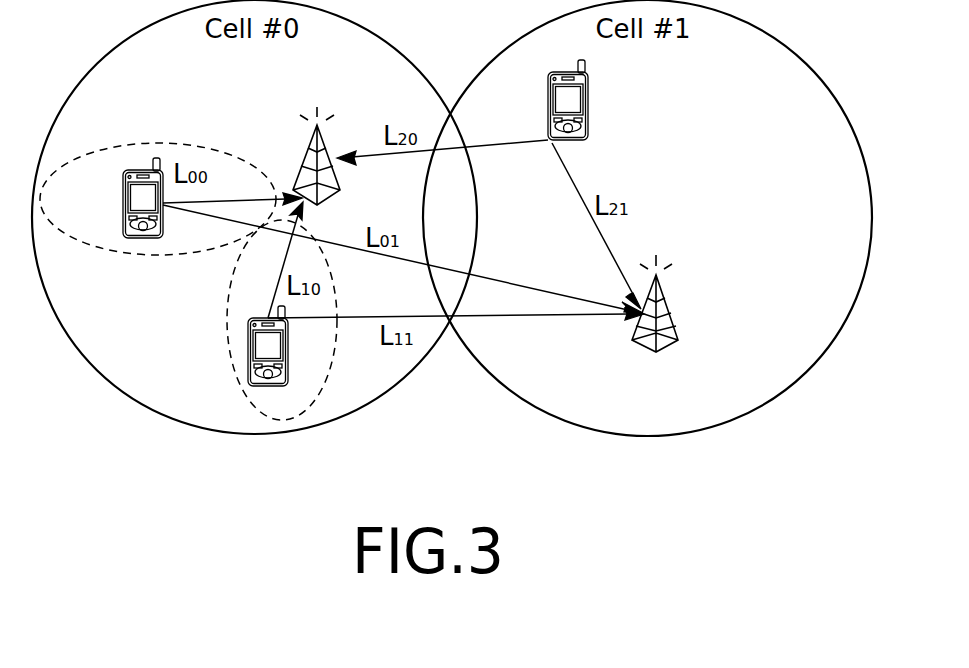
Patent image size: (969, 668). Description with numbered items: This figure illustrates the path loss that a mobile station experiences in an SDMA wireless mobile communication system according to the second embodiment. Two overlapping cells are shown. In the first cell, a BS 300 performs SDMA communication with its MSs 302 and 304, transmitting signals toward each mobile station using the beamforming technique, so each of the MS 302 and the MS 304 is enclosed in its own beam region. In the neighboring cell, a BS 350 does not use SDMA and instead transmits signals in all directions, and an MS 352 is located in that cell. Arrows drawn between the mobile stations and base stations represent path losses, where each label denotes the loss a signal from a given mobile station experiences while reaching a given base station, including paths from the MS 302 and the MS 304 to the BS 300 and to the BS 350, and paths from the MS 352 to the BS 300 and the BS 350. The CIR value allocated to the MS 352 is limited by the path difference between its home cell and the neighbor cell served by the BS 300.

The BS of Cell#0 300 is at (343, 178).
The MS 302 is at (123, 204).
The MS 304 is at (248, 352).
The BS of Cell#1 350 is at (680, 311).
The MS 352 is at (589, 104).